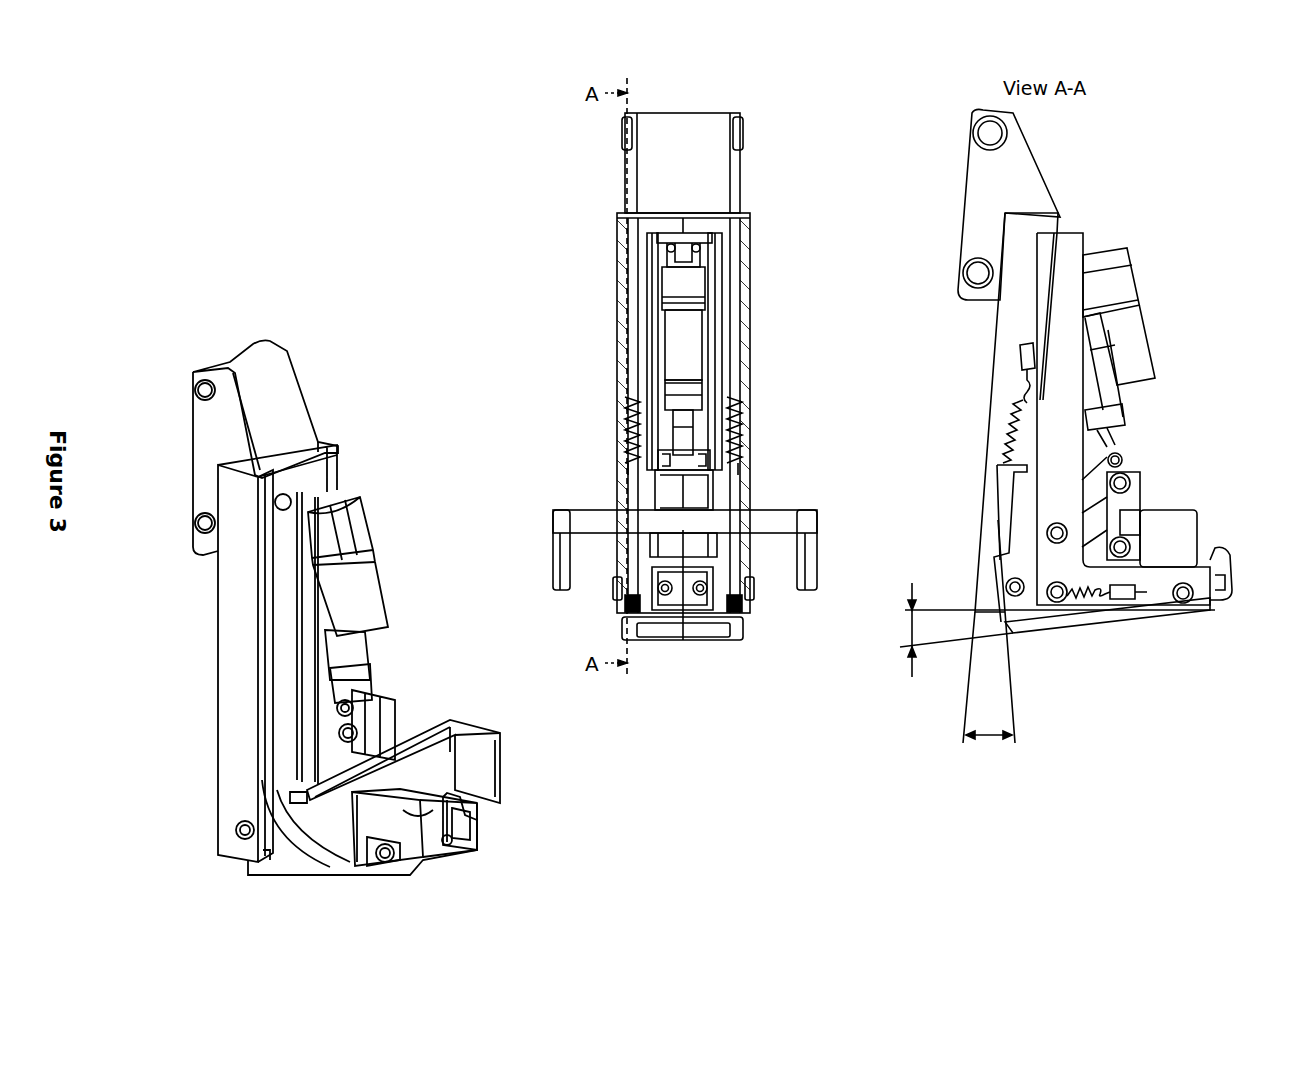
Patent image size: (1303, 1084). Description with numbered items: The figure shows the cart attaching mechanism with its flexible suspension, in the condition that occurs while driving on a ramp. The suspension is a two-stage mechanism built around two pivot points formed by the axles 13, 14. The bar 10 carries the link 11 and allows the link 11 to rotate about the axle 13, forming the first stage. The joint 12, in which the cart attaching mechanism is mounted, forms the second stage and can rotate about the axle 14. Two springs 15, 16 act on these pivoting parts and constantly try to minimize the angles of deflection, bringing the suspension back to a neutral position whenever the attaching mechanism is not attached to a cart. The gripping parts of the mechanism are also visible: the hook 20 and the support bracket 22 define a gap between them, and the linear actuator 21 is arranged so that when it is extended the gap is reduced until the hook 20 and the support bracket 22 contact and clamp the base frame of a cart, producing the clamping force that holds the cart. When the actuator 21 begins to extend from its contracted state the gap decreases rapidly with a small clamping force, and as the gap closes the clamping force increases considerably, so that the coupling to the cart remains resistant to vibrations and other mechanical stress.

The bar 10 is at (233, 630).
The link 11 is at (305, 873).
The joint 12 is at (287, 710).
The axle 13 is at (240, 840).
The axle 14 is at (390, 857).
The spring 15 is at (1075, 600).
The spring 16 is at (997, 440).
The hook 20 is at (475, 822).
The linear actuator 21 is at (360, 530).
The support bracket 22 is at (507, 767).